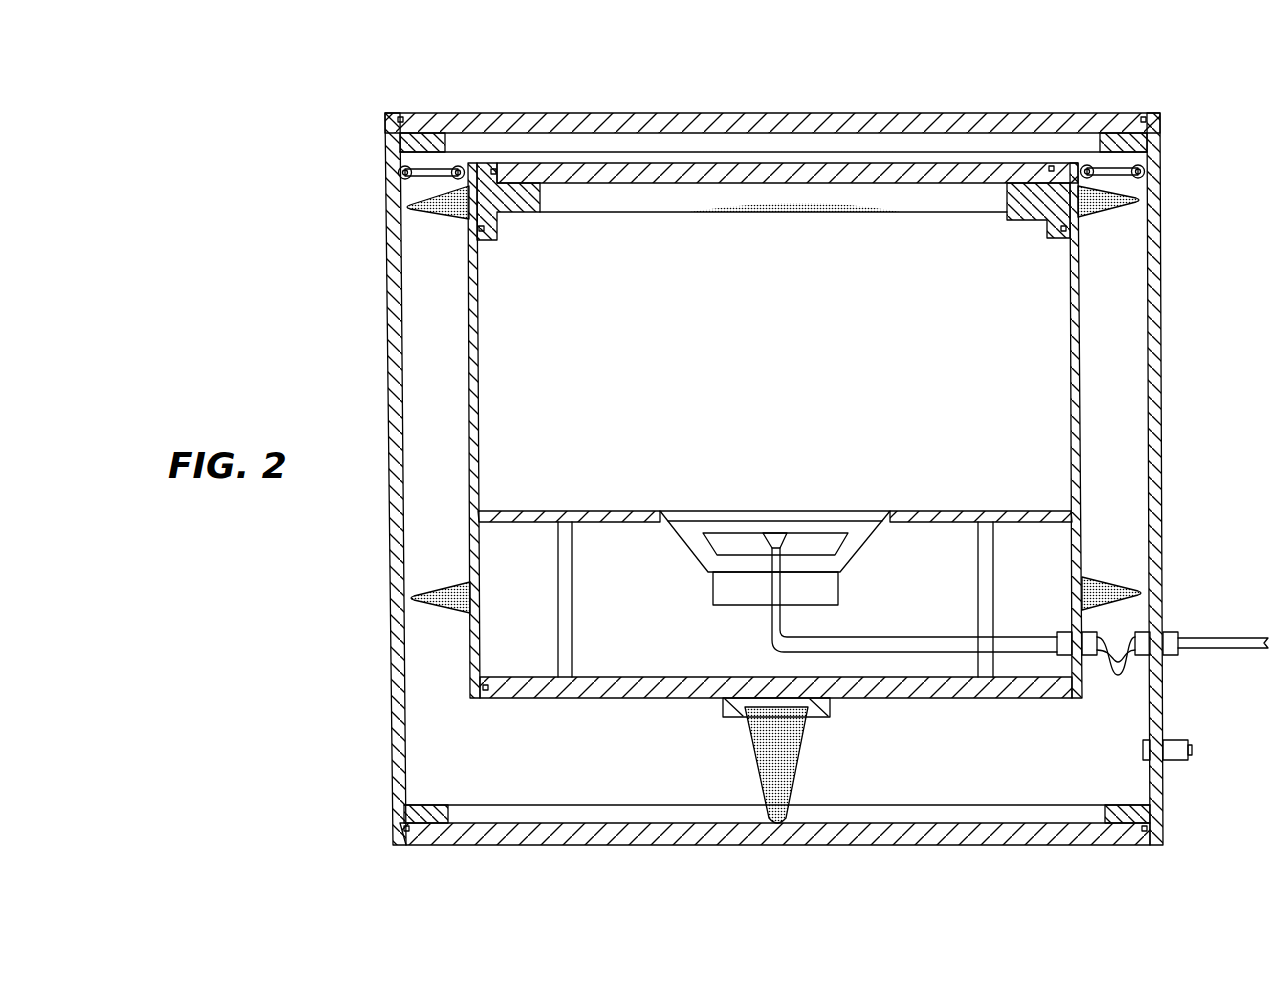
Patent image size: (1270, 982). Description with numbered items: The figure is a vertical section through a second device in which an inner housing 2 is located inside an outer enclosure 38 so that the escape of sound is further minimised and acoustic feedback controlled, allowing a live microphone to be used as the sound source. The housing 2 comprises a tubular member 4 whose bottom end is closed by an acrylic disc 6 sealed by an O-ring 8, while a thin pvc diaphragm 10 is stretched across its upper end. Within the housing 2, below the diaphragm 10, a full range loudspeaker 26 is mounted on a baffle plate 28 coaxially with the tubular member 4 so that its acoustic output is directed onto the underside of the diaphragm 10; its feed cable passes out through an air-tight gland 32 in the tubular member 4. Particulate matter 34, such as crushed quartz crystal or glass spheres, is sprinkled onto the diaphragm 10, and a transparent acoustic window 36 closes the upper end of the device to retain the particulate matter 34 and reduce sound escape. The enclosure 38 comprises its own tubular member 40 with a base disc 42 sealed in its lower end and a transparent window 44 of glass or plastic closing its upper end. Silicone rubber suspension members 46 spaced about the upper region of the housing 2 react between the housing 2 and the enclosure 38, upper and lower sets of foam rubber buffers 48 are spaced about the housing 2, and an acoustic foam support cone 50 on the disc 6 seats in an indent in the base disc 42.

The housing 2 is at (1097, 347).
The tubular member 4 is at (484, 343).
The acrylic disc 6 is at (600, 699).
The O-ring 8 is at (1073, 698).
The diaphragm 10 is at (908, 214).
The full range loudspeaker 26 is at (742, 510).
The baffle plate 28 is at (600, 509).
The air-tight gland 32 is at (1058, 632).
The particulate matter 34 is at (806, 205).
The transparent acoustic window 36 is at (540, 181).
The outer enclosure 38 is at (378, 330).
The tubular member 40 is at (391, 420).
The base disc 42 is at (584, 846).
The transparent window 44 is at (956, 130).
The silicone rubber suspension members 46 is at (430, 168).
The foam rubber buffers 48 is at (432, 222).
The acoustic foam support cone 50 is at (790, 757).